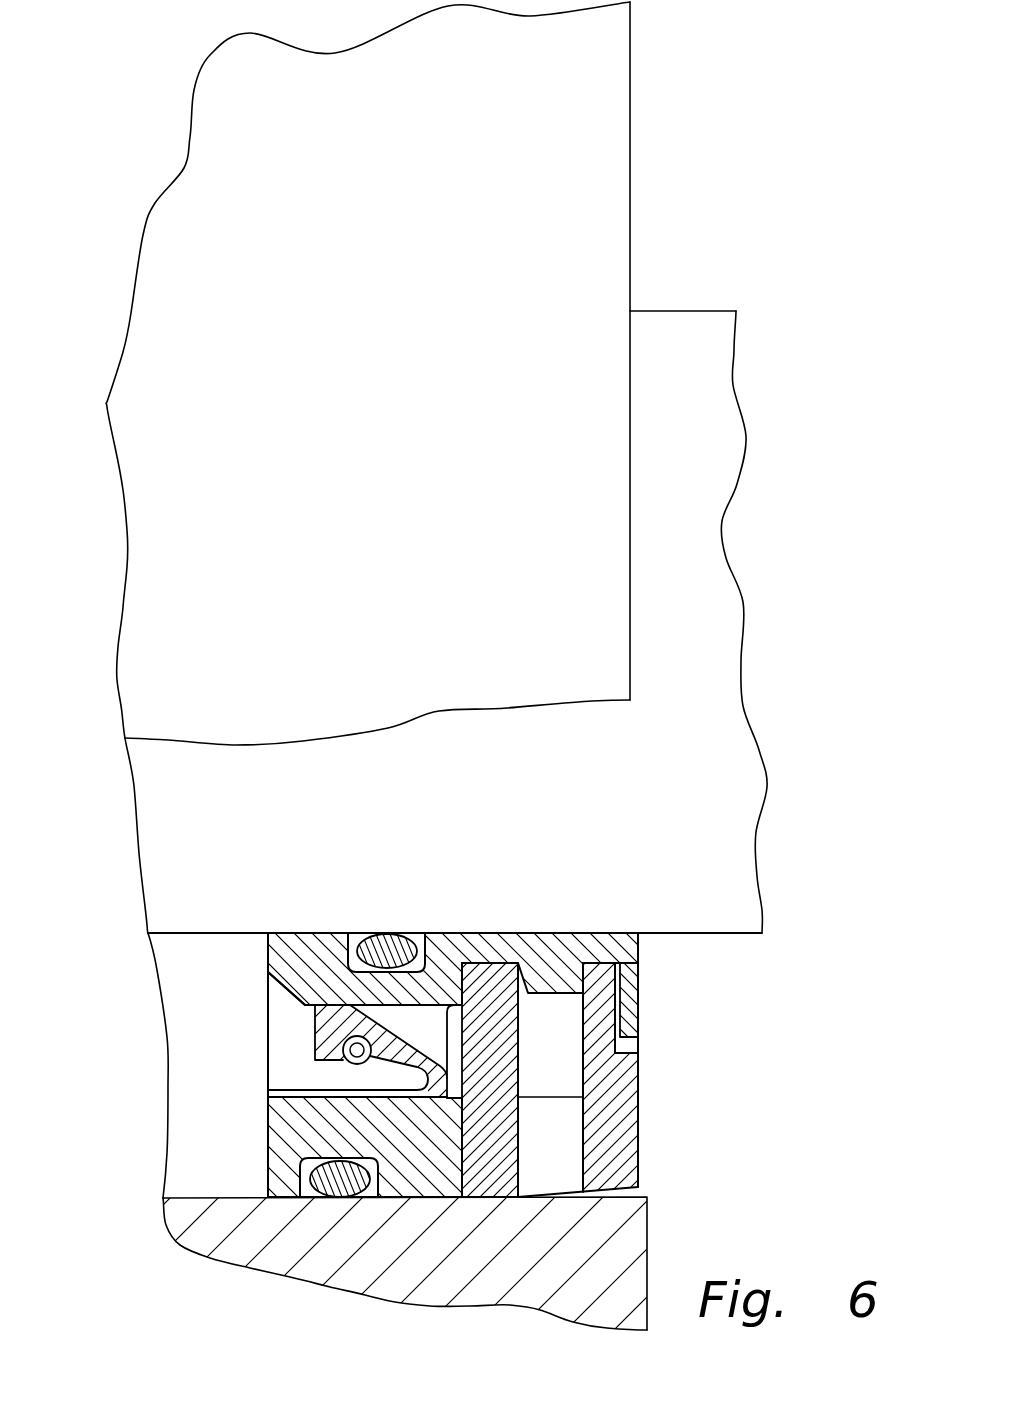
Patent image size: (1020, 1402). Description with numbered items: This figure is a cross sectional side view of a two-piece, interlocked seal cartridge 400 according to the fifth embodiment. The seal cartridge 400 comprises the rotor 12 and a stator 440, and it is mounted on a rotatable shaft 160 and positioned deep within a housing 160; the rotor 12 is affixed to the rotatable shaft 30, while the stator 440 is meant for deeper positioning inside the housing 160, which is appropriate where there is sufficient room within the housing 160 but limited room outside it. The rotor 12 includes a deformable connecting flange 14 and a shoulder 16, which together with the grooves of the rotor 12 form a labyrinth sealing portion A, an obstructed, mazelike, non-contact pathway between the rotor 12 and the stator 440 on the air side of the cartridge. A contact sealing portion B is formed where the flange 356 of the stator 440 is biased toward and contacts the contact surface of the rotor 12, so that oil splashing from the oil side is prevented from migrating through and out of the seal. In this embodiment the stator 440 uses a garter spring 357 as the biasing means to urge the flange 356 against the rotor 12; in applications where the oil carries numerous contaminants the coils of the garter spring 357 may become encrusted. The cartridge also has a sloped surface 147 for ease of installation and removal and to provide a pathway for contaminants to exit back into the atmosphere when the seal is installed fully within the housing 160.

The seal cartridge 400 is at (673, 219).
The rotatable shaft 30 is at (683, 332).
The housing 160 is at (384, 428).
The rotor 12 is at (300, 960).
The shoulder 16 is at (547, 972).
The connecting flange 14 is at (628, 988).
The flange 356 is at (327, 1048).
The garter spring 357 is at (330, 1065).
The stator 440 is at (640, 1103).
The sloped surface 147 is at (628, 1185).
The labyrinth sealing portion A is at (498, 1012).
The contact sealing portion B is at (318, 987).